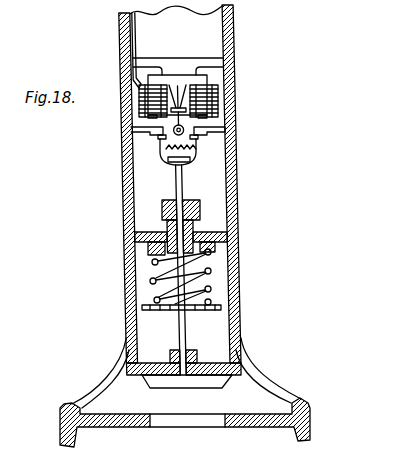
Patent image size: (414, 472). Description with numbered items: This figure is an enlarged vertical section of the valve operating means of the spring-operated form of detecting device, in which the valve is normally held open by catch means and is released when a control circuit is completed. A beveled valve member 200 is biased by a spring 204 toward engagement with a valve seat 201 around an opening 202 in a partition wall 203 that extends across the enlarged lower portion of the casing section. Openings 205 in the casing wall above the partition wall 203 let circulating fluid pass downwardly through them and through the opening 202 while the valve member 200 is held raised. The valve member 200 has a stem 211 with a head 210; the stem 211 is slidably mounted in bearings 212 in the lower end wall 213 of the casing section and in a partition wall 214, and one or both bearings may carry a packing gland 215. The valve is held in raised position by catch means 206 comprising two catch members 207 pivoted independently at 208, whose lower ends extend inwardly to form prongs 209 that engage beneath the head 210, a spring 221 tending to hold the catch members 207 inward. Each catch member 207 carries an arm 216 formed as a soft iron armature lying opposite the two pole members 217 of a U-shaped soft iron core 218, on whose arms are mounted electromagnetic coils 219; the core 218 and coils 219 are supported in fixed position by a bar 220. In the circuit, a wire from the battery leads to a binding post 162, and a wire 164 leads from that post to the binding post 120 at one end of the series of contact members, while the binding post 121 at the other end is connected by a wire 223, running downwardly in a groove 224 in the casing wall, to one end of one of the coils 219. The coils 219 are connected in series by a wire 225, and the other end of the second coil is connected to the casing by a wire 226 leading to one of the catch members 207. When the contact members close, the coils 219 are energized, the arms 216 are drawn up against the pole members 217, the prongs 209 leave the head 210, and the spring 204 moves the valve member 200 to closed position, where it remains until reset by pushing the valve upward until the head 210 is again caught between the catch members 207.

The groove 224 is at (118, 29).
The wire 223 is at (132, 52).
The bar 220 is at (236, 39).
The U-shaped soft iron core 218 is at (226, 63).
The pivot 208 is at (226, 84).
The electromagnetic coils 219 is at (150, 100).
The wire 225 is at (174, 93).
The wire 226 is at (183, 95).
The pole members 217 is at (152, 129).
The arm 216 is at (160, 140).
The catch means 206 is at (198, 147).
The catch members 207 is at (168, 149).
The spring 221 is at (200, 152).
The head 210 is at (196, 168).
The prongs 209 is at (186, 165).
The stem 211 is at (201, 212).
The packing gland 215 is at (230, 237).
The partition wall 214 is at (228, 257).
The spring 204 is at (212, 290).
The bearings 212 is at (160, 229).
The beveled valve member 200 is at (160, 383).
The openings 205 is at (97, 384).
The lower end wall 213 is at (242, 347).
The partition wall 203 is at (270, 428).
The valve seat 201 is at (226, 414).
The opening 202 is at (205, 418).
The binding post 162 is at (104, 465).
The wire 164 is at (141, 463).
The binding post 120 is at (176, 466).
The binding post 121 is at (232, 462).